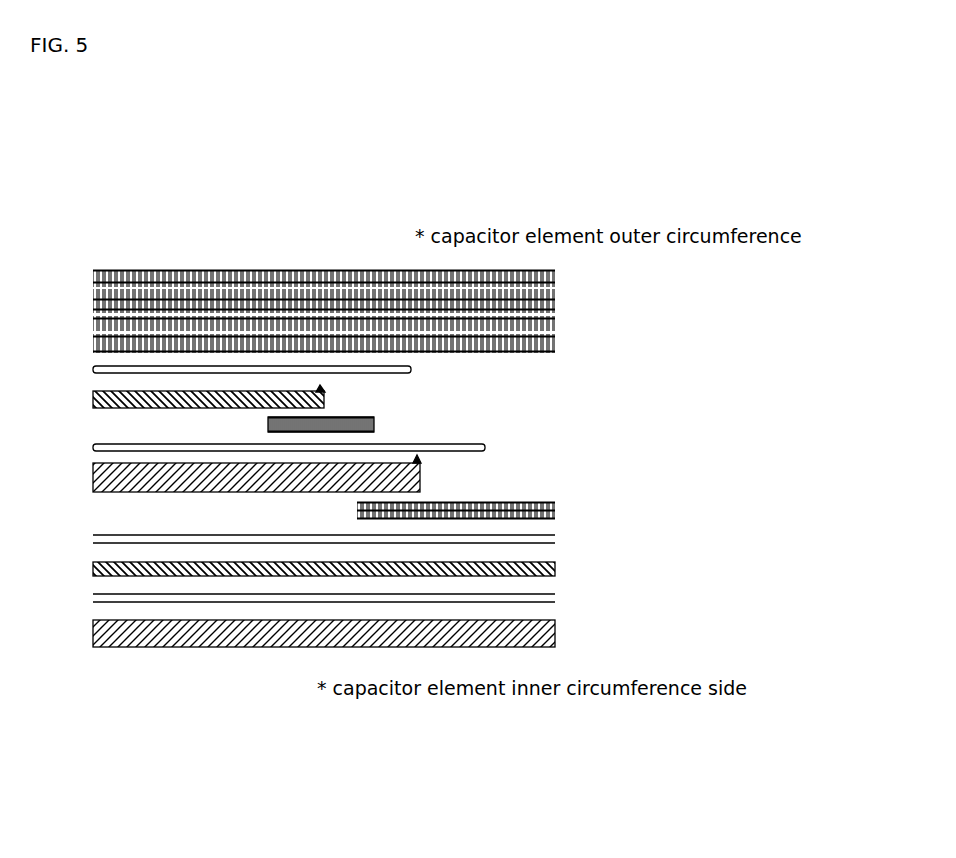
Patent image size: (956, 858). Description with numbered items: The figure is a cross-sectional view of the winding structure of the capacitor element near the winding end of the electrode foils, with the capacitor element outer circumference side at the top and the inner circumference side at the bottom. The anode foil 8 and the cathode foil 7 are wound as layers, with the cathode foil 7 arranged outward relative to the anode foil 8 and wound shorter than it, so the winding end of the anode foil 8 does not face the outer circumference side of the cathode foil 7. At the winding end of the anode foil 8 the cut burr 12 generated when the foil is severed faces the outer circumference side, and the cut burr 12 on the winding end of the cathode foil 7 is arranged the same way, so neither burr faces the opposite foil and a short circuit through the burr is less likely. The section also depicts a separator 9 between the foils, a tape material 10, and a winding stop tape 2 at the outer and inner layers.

The winding stop tape 2 is at (593, 510).
The cathode foil 7 is at (348, 362).
The anode foil 8 is at (324, 620).
The separator 9 is at (403, 458).
The tape material 10 is at (374, 425).
The cut burr 12 is at (322, 388).